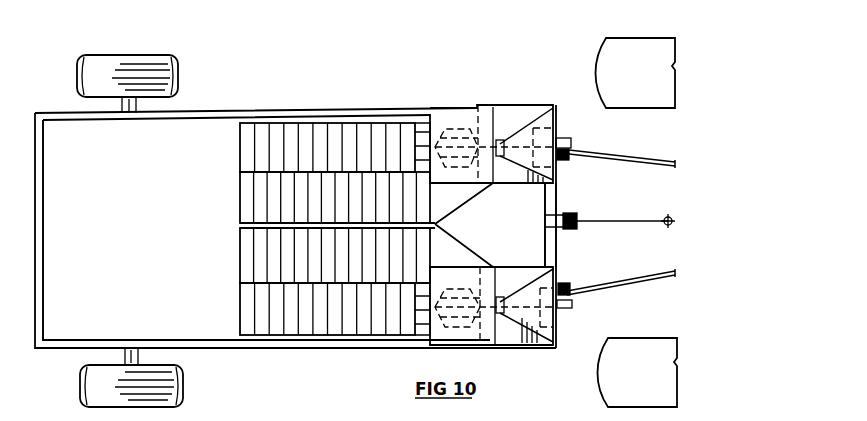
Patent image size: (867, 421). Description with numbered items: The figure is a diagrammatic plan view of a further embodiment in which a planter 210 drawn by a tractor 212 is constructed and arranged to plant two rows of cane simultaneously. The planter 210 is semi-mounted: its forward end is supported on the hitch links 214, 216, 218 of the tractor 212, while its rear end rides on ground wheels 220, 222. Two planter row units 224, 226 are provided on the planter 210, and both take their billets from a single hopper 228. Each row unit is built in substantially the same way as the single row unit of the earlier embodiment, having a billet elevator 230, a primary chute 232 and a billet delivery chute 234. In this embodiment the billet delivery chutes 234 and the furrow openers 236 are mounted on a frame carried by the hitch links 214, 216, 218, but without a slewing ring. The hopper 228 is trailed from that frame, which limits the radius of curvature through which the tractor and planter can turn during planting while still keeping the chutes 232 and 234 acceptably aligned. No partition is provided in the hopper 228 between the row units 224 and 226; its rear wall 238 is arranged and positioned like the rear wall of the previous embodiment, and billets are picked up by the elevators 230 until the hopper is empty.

The planter 210 is at (468, 101).
The tractor 212 is at (588, 366).
The hitch link 214 is at (610, 156).
The hitch link 216 is at (611, 290).
The hitch link 218 is at (595, 223).
The ground wheel 220 is at (178, 72).
The ground wheel 222 is at (183, 372).
The planter row unit 224 is at (236, 175).
The planter row unit 226 is at (232, 284).
The hopper 228 is at (200, 322).
The billet elevator 230 is at (398, 92).
The primary chute 232 is at (452, 205).
The billet delivery chute 234 is at (515, 184).
The furrow opener 236 is at (565, 138).
The rear wall 238 is at (43, 236).